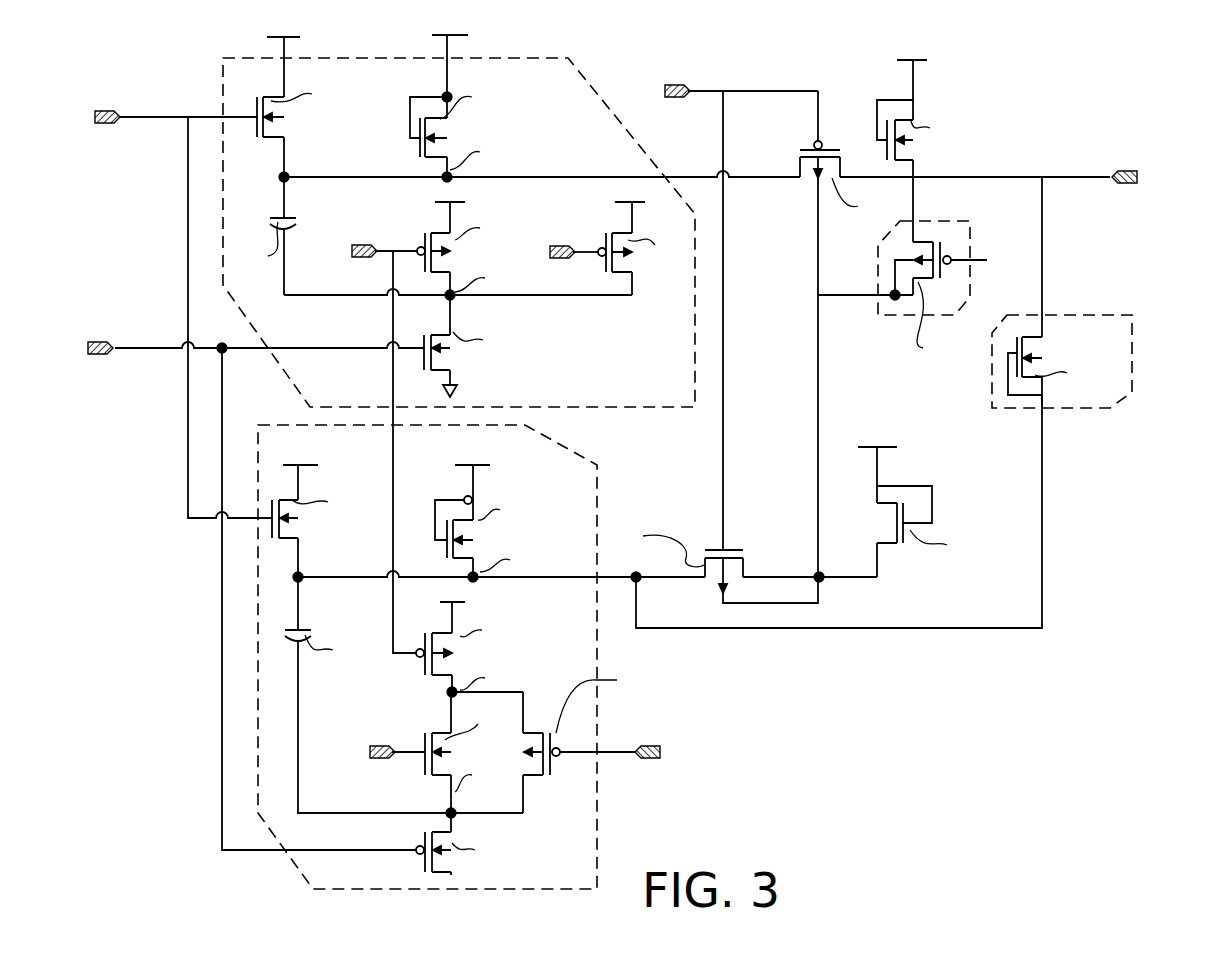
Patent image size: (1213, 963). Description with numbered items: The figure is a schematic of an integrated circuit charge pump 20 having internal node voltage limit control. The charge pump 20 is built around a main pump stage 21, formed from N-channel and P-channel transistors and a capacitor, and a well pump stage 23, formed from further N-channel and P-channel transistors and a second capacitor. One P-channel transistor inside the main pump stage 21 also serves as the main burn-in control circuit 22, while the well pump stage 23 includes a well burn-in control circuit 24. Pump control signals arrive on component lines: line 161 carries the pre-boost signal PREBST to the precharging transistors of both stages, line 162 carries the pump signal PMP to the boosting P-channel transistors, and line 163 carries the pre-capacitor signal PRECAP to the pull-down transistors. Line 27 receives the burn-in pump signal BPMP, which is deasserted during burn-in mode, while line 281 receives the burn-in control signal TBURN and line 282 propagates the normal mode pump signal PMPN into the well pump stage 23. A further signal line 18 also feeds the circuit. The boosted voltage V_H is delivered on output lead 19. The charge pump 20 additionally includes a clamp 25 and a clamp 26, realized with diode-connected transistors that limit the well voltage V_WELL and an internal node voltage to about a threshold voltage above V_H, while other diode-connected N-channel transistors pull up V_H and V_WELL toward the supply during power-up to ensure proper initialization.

The charge pump 20 is at (637, 453).
The line 161 is at (127, 120).
The line 163 is at (121, 350).
The line 162 is at (386, 250).
The PMPBST input terminal 18 is at (700, 96).
The output lead 19 is at (1062, 182).
The main pump stage 21 is at (459, 453).
The main burn-in control circuit 22 is at (459, 212).
The well pump stage 23 is at (465, 657).
The well burn-in control circuit 24 is at (541, 816).
The clamp 25 is at (970, 249).
The clamp 26 is at (1133, 343).
The line 27 is at (582, 256).
The line 281 is at (610, 755).
The line 282 is at (408, 750).